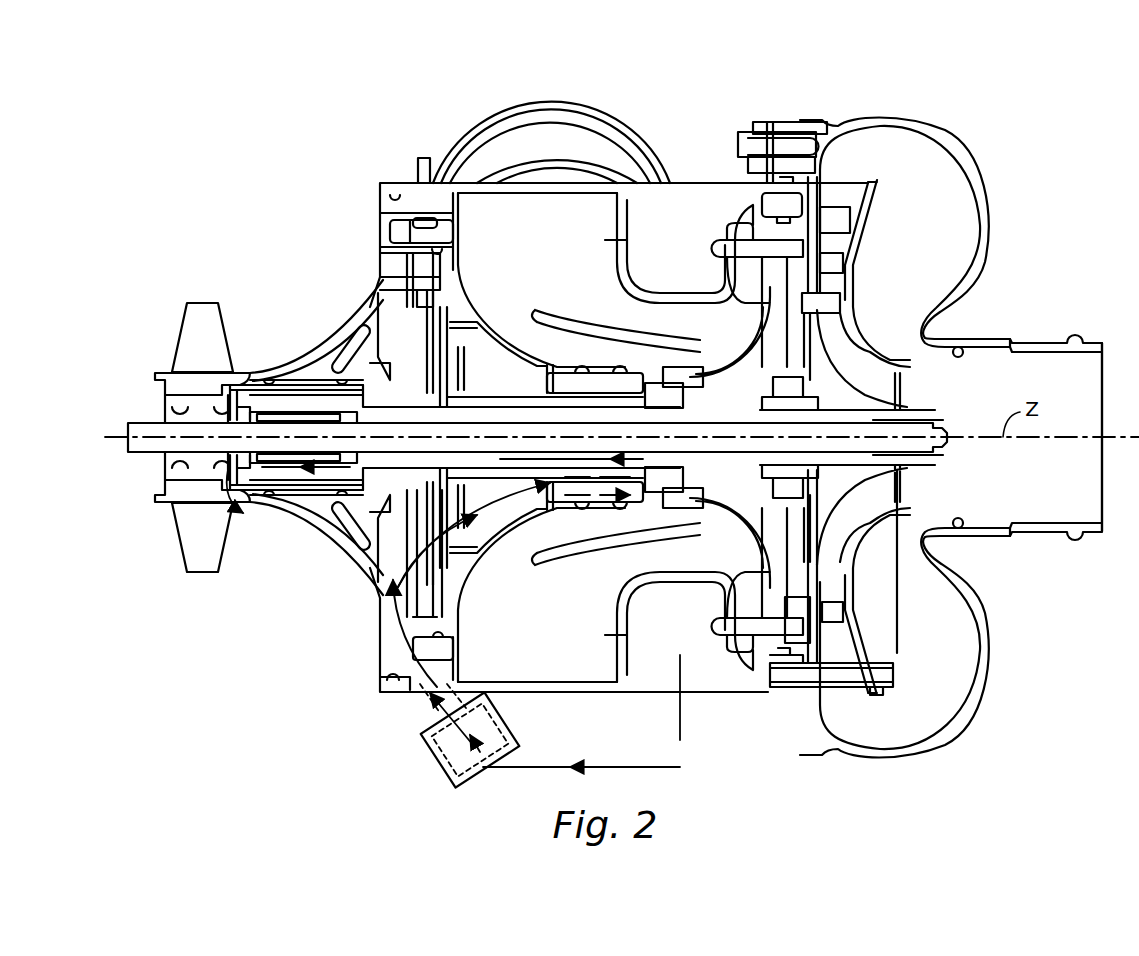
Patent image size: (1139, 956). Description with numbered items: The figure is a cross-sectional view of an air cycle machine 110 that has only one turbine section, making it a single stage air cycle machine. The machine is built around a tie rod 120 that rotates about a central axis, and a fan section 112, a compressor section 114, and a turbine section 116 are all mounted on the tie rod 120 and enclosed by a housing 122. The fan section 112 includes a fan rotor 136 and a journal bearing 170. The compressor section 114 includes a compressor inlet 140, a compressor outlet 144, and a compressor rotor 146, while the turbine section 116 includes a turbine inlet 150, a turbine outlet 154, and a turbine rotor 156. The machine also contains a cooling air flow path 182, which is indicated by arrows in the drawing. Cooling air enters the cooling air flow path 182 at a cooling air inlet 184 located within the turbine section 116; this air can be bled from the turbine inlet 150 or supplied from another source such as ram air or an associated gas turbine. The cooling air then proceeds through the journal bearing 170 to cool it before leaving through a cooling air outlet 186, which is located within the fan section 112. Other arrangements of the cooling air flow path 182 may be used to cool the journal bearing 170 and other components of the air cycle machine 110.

The air cycle machine 110 is at (300, 100).
The fan section 112 is at (310, 243).
The compressor section 114 is at (955, 103).
The turbine section 116 is at (548, 88).
The tie rod 120 is at (500, 430).
The housing 122 is at (350, 333).
The fan rotor 136 is at (192, 322).
The compressor inlet 140 is at (1060, 366).
The compressor outlet 144 is at (937, 187).
The compressor rotor 146 is at (838, 405).
The turbine inlet 150 is at (712, 212).
The turbine outlet 154 is at (485, 222).
The turbine rotor 156 is at (740, 395).
The journal bearing 170 is at (311, 380).
The cooling air flow path 182 is at (393, 628).
The cooling air inlet 184 is at (435, 748).
The cooling air outlet 186 is at (228, 490).